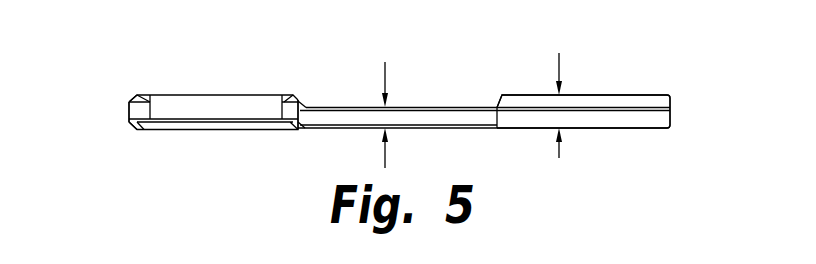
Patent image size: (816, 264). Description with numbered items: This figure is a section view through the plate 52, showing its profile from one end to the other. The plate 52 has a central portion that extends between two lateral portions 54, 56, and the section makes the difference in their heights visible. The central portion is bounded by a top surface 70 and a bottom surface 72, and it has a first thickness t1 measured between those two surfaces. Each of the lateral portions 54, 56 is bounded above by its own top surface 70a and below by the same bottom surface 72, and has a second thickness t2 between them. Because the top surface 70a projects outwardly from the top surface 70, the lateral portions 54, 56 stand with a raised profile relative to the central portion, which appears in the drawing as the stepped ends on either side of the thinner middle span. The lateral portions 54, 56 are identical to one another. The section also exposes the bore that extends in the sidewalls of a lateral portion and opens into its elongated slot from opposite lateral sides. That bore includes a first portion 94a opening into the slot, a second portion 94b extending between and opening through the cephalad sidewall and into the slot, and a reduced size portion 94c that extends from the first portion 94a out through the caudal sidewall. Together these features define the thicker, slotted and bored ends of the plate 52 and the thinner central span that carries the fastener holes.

The plate 52 is at (392, 127).
The lateral portion 54 is at (137, 93).
The lateral portion 56 is at (670, 100).
The top surface 70 is at (453, 106).
The top surface 70a is at (293, 93).
The bottom surface 72 is at (457, 130).
The first portion 94a is at (290, 118).
The second portion 94b is at (136, 109).
The reduced size portion 94c is at (307, 103).
The first thickness t1 is at (388, 98).
The second thickness t2 is at (558, 88).